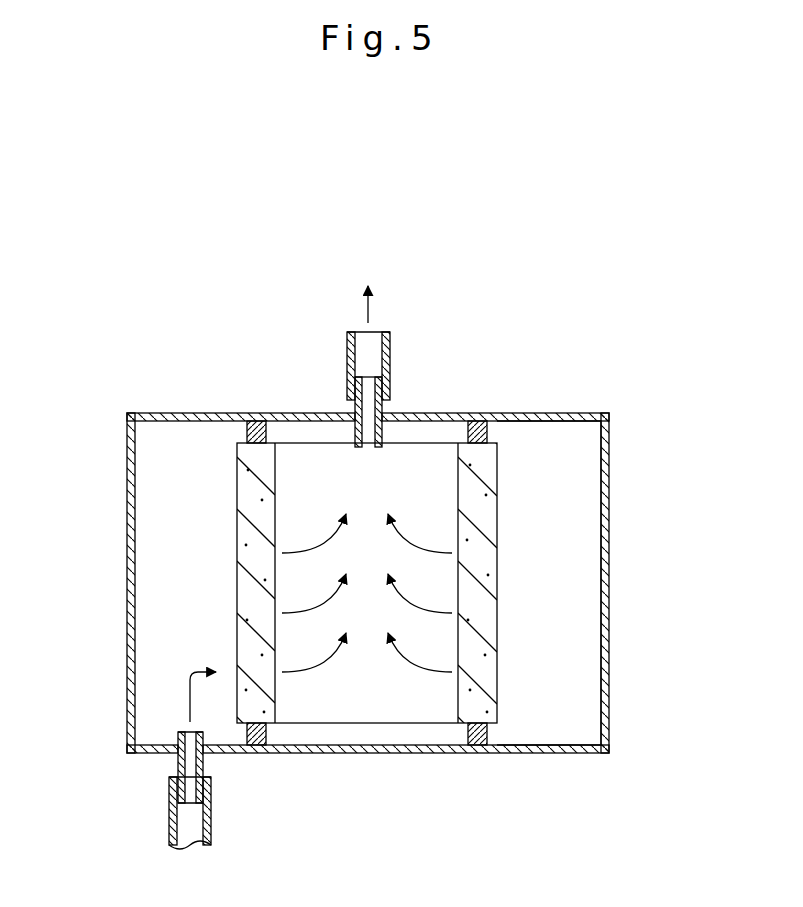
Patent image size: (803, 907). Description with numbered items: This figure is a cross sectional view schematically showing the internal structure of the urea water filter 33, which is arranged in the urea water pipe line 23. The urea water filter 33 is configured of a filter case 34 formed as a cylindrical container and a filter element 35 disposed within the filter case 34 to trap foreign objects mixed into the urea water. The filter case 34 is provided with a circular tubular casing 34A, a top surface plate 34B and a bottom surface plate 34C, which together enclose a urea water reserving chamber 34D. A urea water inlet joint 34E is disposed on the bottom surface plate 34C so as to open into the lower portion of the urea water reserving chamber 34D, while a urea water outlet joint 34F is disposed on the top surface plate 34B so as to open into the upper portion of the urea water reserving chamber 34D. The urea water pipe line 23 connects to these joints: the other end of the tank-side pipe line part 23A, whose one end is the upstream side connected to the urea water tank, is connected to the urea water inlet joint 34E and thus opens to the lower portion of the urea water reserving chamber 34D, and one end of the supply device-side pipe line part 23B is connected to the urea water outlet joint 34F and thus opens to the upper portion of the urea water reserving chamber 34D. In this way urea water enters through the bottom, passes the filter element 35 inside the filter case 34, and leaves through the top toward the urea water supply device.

The urea water filter 33 is at (538, 408).
The filter case 34 is at (127, 582).
The circular tubular casing 34A is at (609, 600).
The top surface plate 34B is at (208, 412).
The bottom surface plate 34C is at (396, 753).
The urea water reserving chamber 34D is at (565, 640).
The urea water inlet joint 34E is at (178, 768).
The urea water outlet joint 34F is at (383, 410).
The filter element 35 is at (497, 560).
The urea water pipe line 23 is at (169, 833).
The tank-side pipe line part 23A is at (211, 833).
The supply device-side pipe line part 23B is at (347, 360).